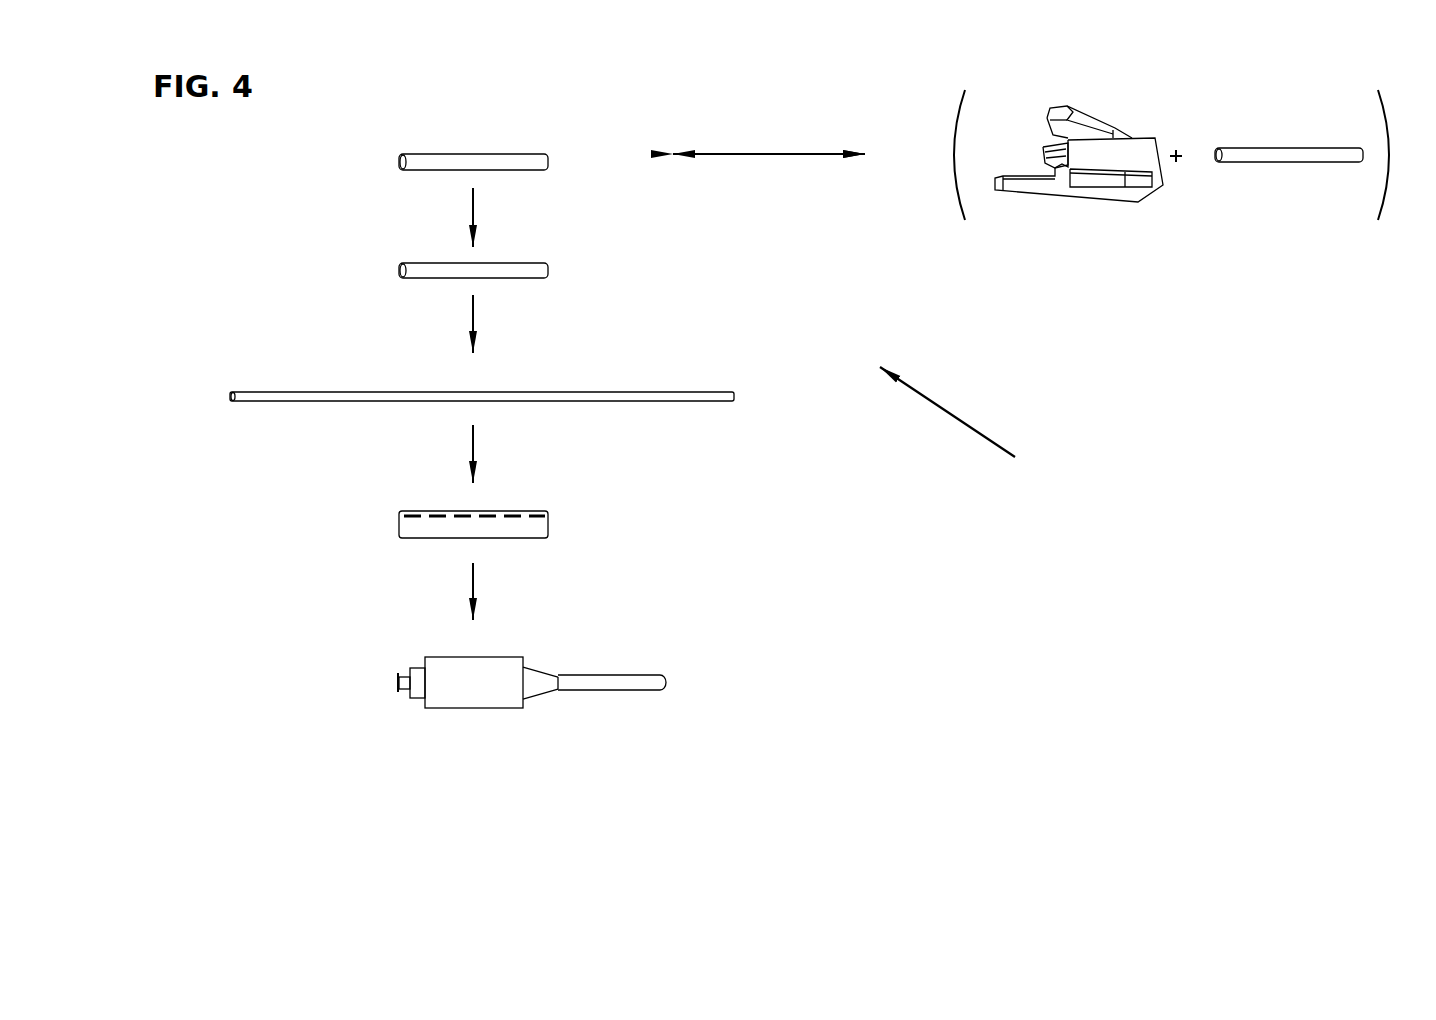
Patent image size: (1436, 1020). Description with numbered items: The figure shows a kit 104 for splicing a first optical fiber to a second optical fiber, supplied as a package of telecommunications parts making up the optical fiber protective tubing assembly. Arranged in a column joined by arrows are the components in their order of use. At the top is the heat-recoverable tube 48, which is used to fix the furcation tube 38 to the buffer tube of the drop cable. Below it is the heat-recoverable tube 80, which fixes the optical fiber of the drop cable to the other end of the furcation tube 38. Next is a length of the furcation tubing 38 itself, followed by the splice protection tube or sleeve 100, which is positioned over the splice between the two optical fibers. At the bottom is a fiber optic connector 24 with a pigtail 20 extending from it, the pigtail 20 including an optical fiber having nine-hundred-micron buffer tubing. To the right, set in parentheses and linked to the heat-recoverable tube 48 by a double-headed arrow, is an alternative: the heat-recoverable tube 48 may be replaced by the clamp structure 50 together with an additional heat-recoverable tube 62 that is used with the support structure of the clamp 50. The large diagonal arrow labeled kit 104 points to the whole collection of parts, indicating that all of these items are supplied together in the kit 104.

The heat-recoverable tube 48 is at (513, 155).
The heat-recoverable tube 80 is at (530, 263).
The furcation tube 38 is at (663, 395).
The splice protection tube 100 is at (531, 535).
The fiber optic connector 24 is at (482, 705).
The pigtail 20 is at (612, 686).
The clamp structure 50 is at (1102, 197).
The heat-recoverable tube 62 is at (1295, 156).
The kit 104 is at (969, 422).